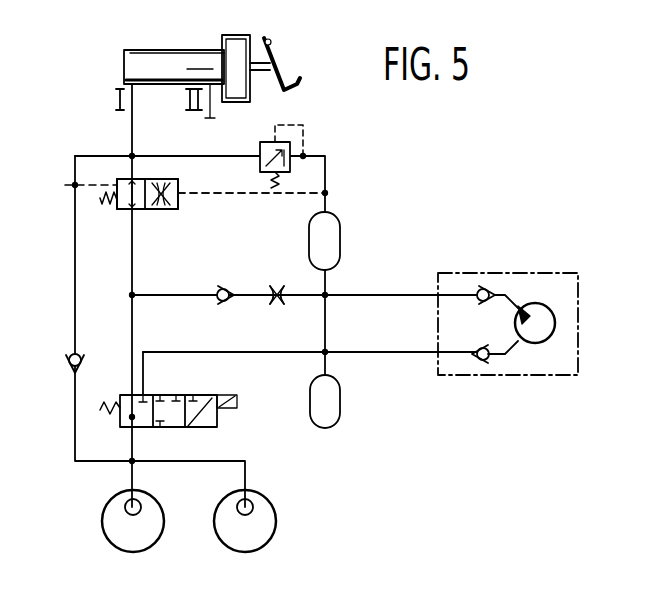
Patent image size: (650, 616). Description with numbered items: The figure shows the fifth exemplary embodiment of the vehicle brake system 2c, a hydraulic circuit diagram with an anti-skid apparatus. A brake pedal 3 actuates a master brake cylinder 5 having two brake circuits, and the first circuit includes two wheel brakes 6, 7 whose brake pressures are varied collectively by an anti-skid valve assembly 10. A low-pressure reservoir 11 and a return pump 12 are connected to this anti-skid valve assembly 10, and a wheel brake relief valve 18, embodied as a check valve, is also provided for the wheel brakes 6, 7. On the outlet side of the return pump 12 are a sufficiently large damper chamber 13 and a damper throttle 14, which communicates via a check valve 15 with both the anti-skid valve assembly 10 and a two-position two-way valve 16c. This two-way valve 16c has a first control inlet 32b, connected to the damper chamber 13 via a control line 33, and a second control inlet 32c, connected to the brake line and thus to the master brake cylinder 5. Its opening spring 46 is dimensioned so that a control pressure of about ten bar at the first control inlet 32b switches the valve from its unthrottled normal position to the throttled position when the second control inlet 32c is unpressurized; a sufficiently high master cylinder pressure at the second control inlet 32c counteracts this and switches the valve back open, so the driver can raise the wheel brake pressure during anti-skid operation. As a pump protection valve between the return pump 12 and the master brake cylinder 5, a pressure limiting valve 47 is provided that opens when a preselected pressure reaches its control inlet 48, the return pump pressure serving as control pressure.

The vehicle brake system 2c is at (383, 177).
The brake pedal 3 is at (300, 82).
The master brake cylinder 5 is at (158, 64).
The wheel brake 6 is at (141, 505).
The wheel brake 7 is at (253, 505).
The anti-skid valve assembly 10 is at (152, 427).
The low-pressure reservoir 11 is at (340, 402).
The return pump 12 is at (518, 273).
The damper chamber 13 is at (338, 242).
The damper throttle 14 is at (279, 302).
The check valve 15 is at (218, 301).
The 2/2-way valve 16c is at (145, 209).
The wheel brake relief valve 18 is at (70, 357).
The first control inlet 32b is at (178, 196).
The second control inlet 32c is at (114, 178).
The control line 33 is at (245, 197).
The opening spring 46 is at (101, 219).
The pressure limiting valve 47 is at (260, 166).
The control inlet 48 is at (268, 142).